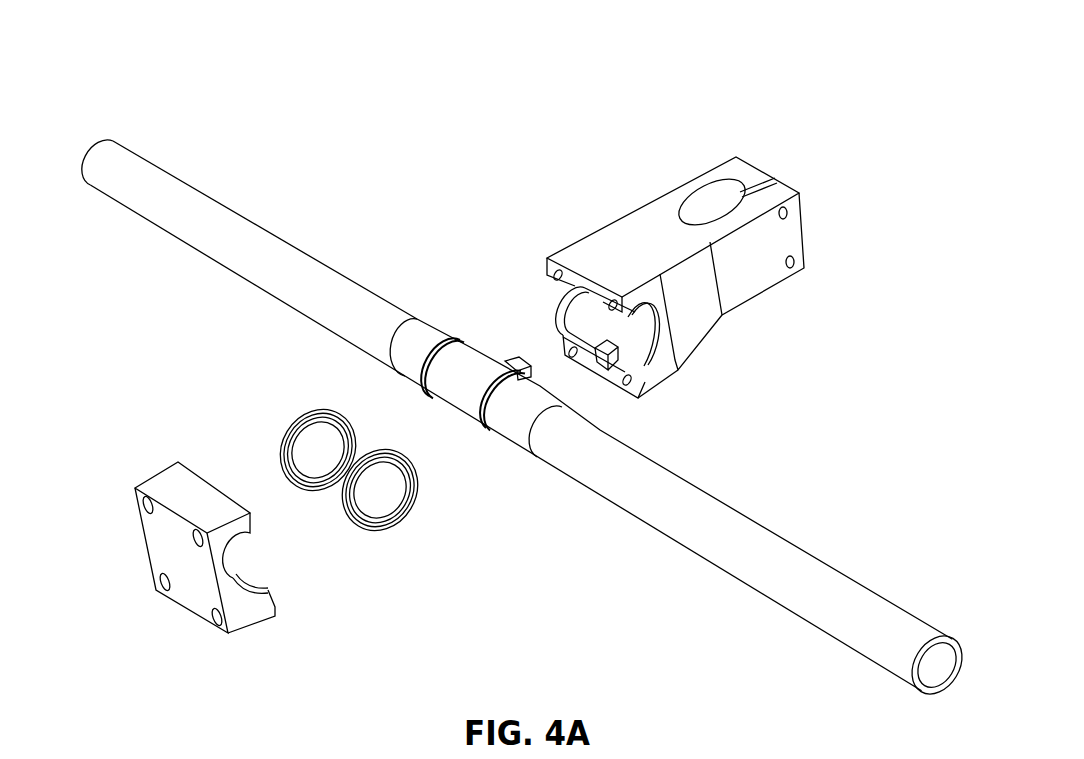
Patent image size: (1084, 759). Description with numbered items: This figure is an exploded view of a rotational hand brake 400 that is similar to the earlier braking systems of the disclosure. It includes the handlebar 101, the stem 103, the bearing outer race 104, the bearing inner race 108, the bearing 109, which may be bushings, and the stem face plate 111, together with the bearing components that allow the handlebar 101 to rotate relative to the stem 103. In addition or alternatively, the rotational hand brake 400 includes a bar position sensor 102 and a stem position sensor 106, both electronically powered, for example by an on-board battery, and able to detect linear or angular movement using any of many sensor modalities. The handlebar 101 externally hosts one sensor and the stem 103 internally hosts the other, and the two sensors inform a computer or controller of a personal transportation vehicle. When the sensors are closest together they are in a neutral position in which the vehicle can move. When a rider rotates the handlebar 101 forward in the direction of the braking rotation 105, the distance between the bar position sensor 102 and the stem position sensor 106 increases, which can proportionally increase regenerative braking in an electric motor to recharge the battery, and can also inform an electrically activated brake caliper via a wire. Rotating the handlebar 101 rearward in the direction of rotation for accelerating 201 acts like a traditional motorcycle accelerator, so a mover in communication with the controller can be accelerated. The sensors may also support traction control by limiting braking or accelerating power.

The handlebar 101 is at (861, 578).
The direction of rotation for accelerating 201 is at (170, 138).
The direction of the braking rotation 105 is at (58, 168).
The bearing inner race 108 is at (437, 353).
The bar position sensor 102 is at (514, 357).
The stem 103 is at (776, 178).
The bearing outer race 104 is at (625, 358).
The stem position sensor 106 is at (608, 352).
The rotational hand brake 400 is at (700, 108).
The bearing 109 is at (352, 472).
The stem face plate 111 is at (230, 637).